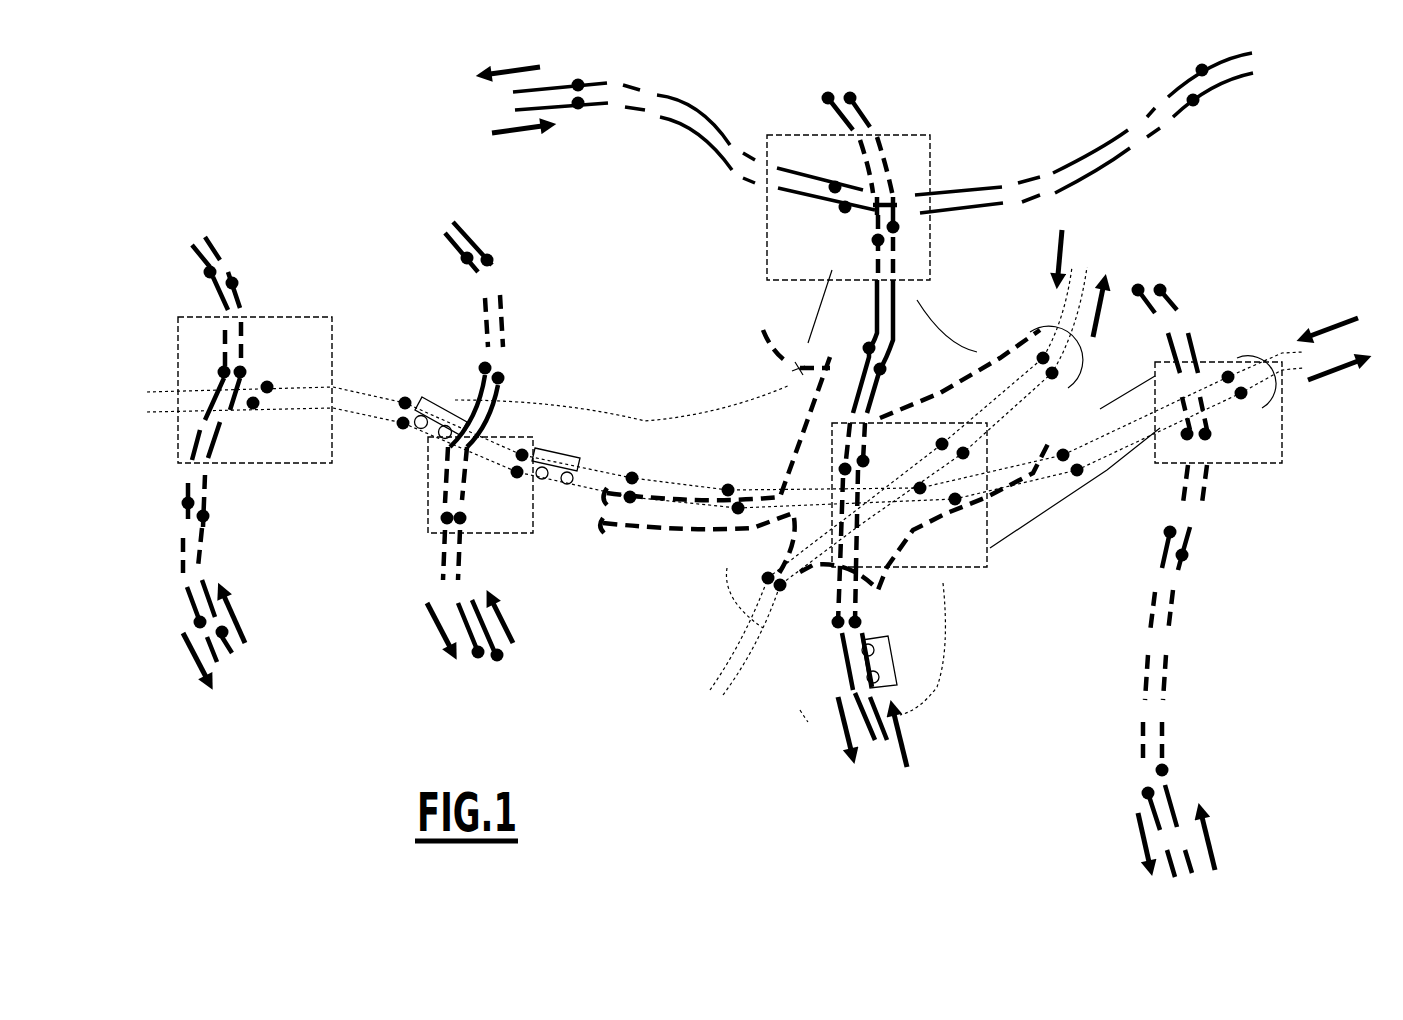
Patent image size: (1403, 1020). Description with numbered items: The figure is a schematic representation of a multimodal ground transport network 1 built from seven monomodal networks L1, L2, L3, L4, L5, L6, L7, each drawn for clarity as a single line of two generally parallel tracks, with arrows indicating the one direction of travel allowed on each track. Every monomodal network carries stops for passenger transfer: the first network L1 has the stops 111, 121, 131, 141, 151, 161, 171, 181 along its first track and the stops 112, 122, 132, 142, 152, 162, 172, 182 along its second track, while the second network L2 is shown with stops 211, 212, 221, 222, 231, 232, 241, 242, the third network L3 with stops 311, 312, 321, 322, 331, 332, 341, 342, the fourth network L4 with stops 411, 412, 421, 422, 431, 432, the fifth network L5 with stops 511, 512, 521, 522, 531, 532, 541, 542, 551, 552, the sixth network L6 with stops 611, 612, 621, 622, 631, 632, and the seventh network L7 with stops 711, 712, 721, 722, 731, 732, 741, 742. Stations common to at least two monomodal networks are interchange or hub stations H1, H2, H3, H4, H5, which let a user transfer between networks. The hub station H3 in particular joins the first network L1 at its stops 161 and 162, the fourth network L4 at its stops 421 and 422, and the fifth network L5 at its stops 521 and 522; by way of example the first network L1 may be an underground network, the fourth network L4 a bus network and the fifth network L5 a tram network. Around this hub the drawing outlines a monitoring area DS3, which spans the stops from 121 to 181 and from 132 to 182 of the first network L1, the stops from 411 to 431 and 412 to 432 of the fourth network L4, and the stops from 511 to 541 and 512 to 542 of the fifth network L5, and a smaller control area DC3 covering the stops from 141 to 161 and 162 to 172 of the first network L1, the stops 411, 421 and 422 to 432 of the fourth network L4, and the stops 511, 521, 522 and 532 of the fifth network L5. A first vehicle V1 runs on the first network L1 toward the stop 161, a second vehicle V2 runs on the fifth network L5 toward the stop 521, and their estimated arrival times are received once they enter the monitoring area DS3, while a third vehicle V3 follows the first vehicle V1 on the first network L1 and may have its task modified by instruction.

The multimodal ground transport network 1 is at (352, 727).
The first monomodal network L1 is at (715, 430).
The second monomodal network L2 is at (214, 442).
The third monomodal network L3 is at (470, 430).
The fourth monomodal network L4 is at (893, 462).
The fifth monomodal network L5 is at (870, 432).
The sixth monomodal network L6 is at (871, 133).
The seventh monomodal network L7 is at (1156, 583).
The hub station H1 is at (300, 317).
The hub station H2 is at (505, 495).
The hub station H3 is at (987, 567).
The hub station H4 is at (1228, 463).
The hub station H5 is at (900, 135).
The first vehicle V1 is at (562, 458).
The second vehicle V2 is at (892, 657).
The third vehicle V3 is at (441, 402).
The monitoring area DS3 is at (697, 413).
The control area DC3 is at (783, 342).
The stop 111 is at (254, 410).
The stop 112 is at (270, 383).
The stop 121 is at (400, 430).
The stop 122 is at (404, 398).
The stop 131 is at (516, 478).
The stop 132 is at (522, 448).
The stop 141 is at (629, 503).
The stop 142 is at (632, 471).
The stop 151 is at (737, 515).
The stop 152 is at (731, 486).
The stop 161 is at (957, 506).
The stop 162 is at (920, 495).
The stop 171 is at (1079, 477).
The stop 172 is at (1062, 448).
The stop 181 is at (1245, 398).
The stop 182 is at (1227, 370).
The stop 211 is at (229, 633).
The stop 212 is at (194, 622).
The stop 221 is at (209, 518).
The stop 222 is at (183, 505).
The stop 231 is at (245, 373).
The stop 232 is at (219, 373).
The stop 241 is at (238, 285).
The stop 242 is at (205, 275).
The stop 311 is at (499, 661).
The stop 312 is at (476, 660).
The stop 321 is at (464, 523).
The stop 322 is at (441, 518).
The stop 331 is at (503, 376).
The stop 332 is at (482, 367).
The stop 341 is at (493, 260).
The stop 342 is at (462, 262).
The stop 411 is at (784, 592).
The stop 412 is at (768, 571).
The stop 421 is at (968, 456).
The stop 422 is at (941, 438).
The stop 431 is at (1057, 378).
The stop 432 is at (1040, 352).
The stop 511 is at (862, 622).
The stop 512 is at (833, 626).
The stop 521 is at (869, 462).
The stop 522 is at (839, 470).
The stop 531 is at (886, 370).
The stop 532 is at (862, 348).
The stop 541 is at (900, 227).
The stop 542 is at (873, 244).
The stop 551 is at (855, 93).
The stop 552 is at (822, 98).
The stop 611 is at (578, 110).
The stop 612 is at (579, 78).
The stop 621 is at (845, 213).
The stop 622 is at (835, 180).
The stop 631 is at (1195, 108).
The stop 632 is at (1204, 63).
The stop 711 is at (1170, 770).
The stop 712 is at (1142, 794).
The stop 721 is at (1189, 556).
The stop 722 is at (1165, 535).
The stop 731 is at (1211, 435).
The stop 732 is at (1183, 440).
The stop 741 is at (1165, 288).
The stop 742 is at (1133, 290).